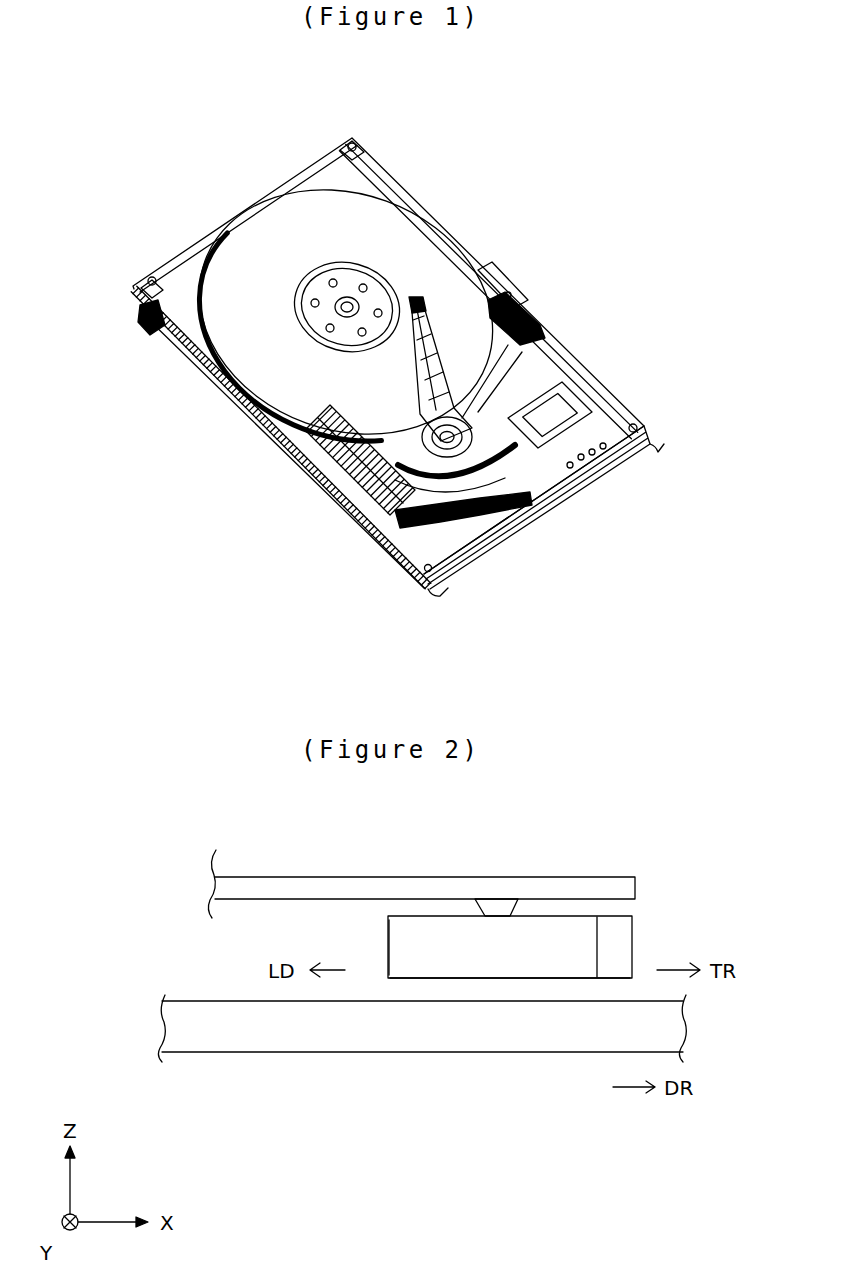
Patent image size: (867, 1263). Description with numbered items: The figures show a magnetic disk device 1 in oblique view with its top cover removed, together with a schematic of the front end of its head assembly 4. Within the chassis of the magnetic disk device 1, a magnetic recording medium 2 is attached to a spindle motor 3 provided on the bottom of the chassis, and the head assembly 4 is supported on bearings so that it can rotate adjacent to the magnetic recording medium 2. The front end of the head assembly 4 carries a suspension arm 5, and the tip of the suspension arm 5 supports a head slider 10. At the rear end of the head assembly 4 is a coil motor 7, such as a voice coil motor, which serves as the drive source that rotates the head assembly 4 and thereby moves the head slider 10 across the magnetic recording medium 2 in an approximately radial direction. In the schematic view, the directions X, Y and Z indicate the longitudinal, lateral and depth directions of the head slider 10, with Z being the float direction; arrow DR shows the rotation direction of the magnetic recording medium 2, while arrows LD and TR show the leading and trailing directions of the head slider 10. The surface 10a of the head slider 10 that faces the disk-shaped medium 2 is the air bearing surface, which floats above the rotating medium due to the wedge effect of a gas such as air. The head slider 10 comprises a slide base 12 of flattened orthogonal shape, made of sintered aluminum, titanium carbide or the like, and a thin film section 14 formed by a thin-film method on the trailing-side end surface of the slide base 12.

In FIG. 1, the magnetic disk device 1 is at (447, 137).
In FIG. 1, the magnetic recording medium 2 is at (425, 257).
In FIG. 2, the magnetic recording medium 2 is at (222, 1032).
In FIG. 1, the spindle motor 3 is at (308, 315).
In FIG. 1, the head assembly 4 is at (490, 400).
In FIG. 1, the suspension arm 5 is at (423, 318).
In FIG. 2, the suspension arm 5 is at (295, 876).
In FIG. 1, the coil motor 7 is at (406, 481).
In FIG. 1, the head slider 10 is at (423, 293).
In FIG. 2, the head slider 10 is at (641, 915).
In FIG. 2, the air bearing surface 10a is at (485, 978).
In FIG. 2, the slide base 12 is at (386, 943).
In FIG. 2, the thin film section 14 is at (615, 948).